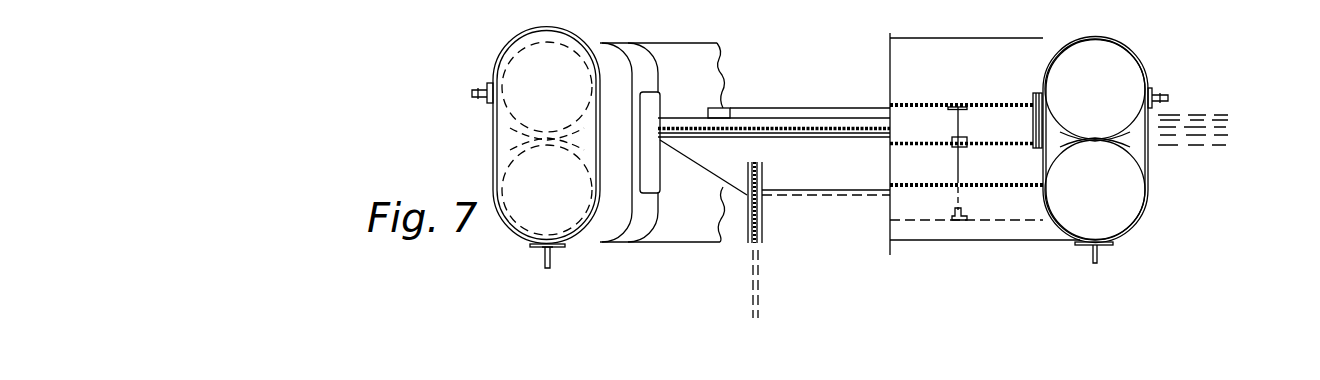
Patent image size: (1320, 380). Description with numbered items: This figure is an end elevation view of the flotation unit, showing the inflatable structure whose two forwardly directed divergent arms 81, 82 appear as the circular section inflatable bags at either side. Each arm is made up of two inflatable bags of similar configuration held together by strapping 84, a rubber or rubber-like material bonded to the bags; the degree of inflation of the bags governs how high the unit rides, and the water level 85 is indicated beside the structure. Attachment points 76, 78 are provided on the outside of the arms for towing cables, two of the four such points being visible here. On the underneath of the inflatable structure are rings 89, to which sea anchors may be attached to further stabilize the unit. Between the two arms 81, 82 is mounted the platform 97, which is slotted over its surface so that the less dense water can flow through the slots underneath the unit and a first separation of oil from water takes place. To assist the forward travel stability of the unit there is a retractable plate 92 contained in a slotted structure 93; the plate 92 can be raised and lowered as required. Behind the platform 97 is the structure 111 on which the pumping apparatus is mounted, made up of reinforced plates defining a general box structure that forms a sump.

The attachment point 76 is at (1168, 98).
The attachment point 78 is at (470, 93).
The forwardly directed divergent arm 81 is at (1112, 68).
The forwardly directed divergent arm 82 is at (568, 55).
The strapping 84 is at (492, 142).
The water level 85 is at (1207, 113).
The ring 89 is at (542, 258).
The retractable plate 92 is at (759, 263).
The slotted structure 93 is at (763, 217).
The platform 97 is at (765, 130).
The structure 111 is at (1008, 103).